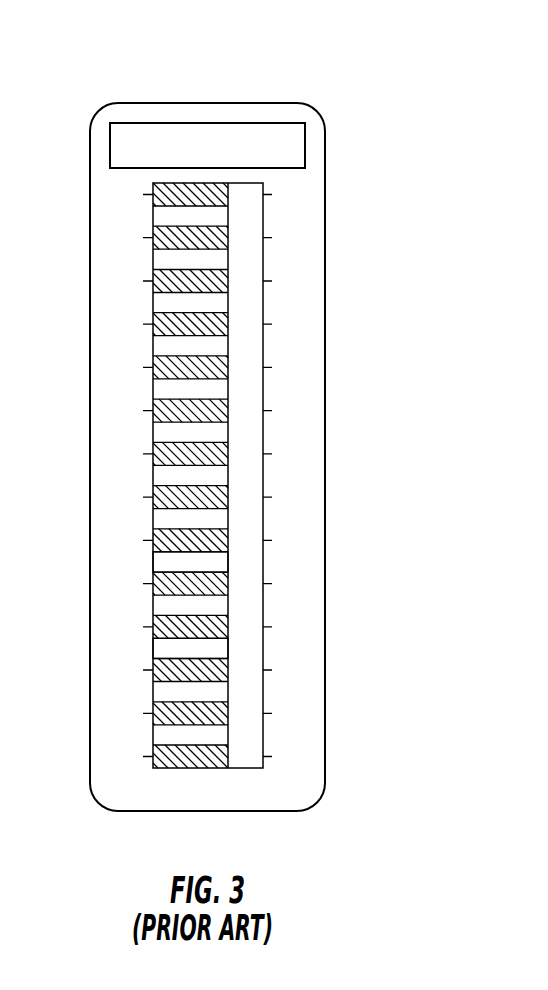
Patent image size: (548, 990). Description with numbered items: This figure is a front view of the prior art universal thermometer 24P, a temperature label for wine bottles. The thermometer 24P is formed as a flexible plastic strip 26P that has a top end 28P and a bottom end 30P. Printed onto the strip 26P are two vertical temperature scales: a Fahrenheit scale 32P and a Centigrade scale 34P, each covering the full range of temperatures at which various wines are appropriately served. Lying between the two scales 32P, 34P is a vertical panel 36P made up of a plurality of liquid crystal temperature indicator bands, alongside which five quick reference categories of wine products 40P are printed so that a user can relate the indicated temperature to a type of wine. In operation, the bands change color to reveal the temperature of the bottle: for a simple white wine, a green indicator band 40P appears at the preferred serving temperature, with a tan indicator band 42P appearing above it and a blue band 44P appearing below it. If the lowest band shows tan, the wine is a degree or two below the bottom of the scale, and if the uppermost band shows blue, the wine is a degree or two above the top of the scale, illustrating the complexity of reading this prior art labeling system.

The prior art universal thermometer 24P is at (349, 159).
The flexible plastic strip 26P is at (313, 398).
The top end 28P is at (260, 103).
The bottom end 30P is at (252, 797).
The vertical scale of temperature in Fahrenheit 32P is at (303, 788).
The vertical scale of temperature in Centigrade 34P is at (123, 792).
The vertical panel 36P is at (183, 768).
The quick reference categories of wine products 40P is at (258, 348).
The tan indicator band 42P is at (217, 602).
The blue band 44P is at (203, 648).